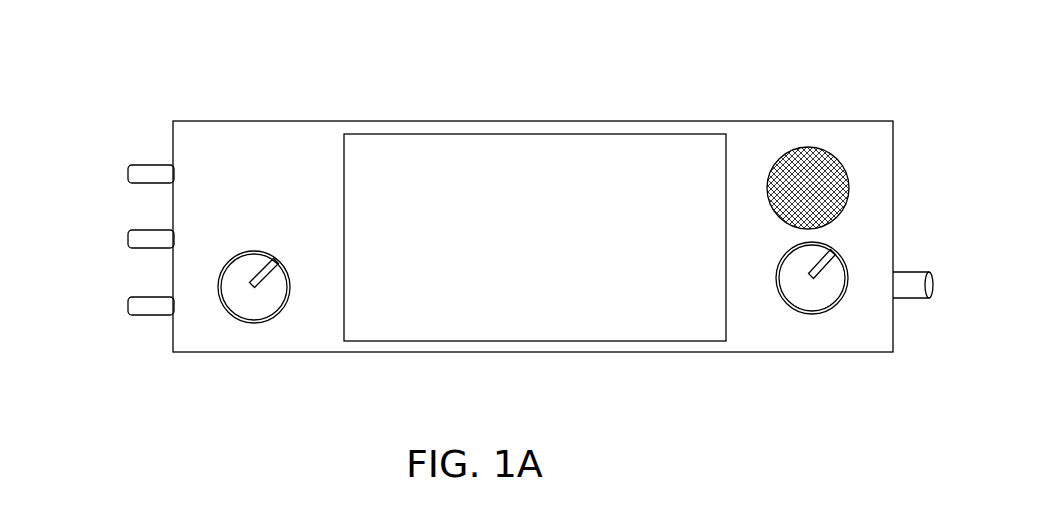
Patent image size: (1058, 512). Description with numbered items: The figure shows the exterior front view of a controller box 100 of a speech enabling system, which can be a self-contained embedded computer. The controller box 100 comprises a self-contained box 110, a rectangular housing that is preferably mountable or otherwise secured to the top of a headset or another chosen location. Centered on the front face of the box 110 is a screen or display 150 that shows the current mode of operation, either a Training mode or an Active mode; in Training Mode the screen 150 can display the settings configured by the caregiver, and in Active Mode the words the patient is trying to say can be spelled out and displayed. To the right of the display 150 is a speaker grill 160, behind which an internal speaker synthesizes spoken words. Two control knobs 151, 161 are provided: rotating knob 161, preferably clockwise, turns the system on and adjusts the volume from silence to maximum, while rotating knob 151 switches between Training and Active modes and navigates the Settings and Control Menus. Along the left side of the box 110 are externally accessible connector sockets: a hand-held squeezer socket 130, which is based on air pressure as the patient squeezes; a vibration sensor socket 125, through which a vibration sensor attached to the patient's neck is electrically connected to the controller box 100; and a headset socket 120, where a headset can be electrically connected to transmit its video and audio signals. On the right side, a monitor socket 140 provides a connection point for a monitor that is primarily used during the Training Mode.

The controller box 100 is at (152, 40).
The self-contained box 110 is at (313, 121).
The headset socket 120 is at (128, 306).
The vibration sensor socket 125 is at (128, 239).
The squeezer socket 130 is at (128, 173).
The monitor socket 140 is at (915, 272).
The screen or display 150 is at (449, 152).
The control knob 151 is at (254, 323).
The speaker grill 160 is at (808, 150).
The control knob 161 is at (812, 314).